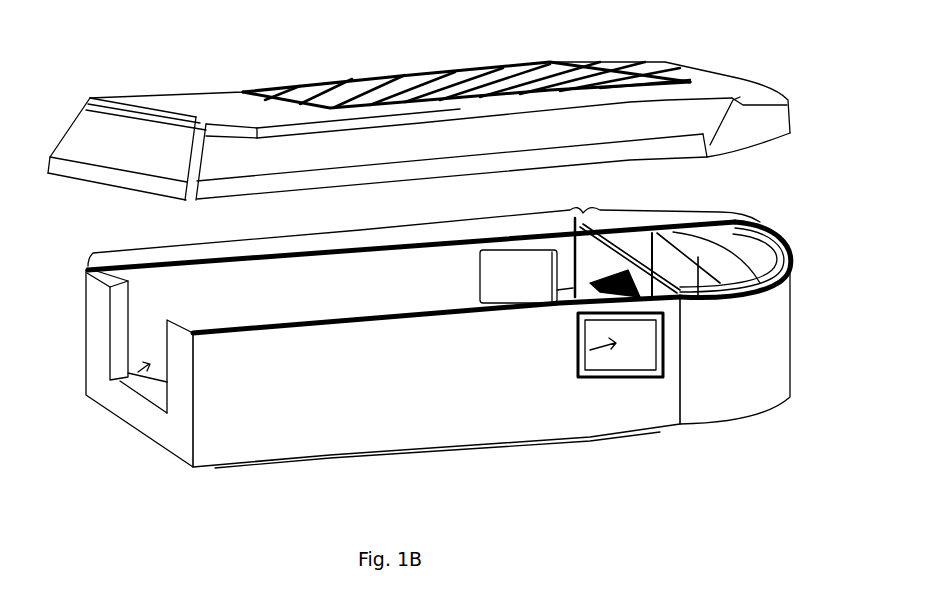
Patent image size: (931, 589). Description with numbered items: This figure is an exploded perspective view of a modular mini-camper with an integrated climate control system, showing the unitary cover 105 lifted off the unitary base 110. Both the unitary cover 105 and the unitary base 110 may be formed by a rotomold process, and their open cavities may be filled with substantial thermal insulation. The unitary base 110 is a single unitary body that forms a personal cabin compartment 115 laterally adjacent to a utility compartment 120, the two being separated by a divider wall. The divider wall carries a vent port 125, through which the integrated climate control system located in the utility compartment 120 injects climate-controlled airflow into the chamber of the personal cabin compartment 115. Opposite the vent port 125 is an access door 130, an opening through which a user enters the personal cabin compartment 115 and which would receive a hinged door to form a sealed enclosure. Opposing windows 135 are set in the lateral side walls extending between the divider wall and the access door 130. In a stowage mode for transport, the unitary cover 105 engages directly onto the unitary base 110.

The unitary cover 105 is at (668, 62).
The unitary base 110 is at (533, 438).
The personal cabin compartment 115 is at (340, 228).
The utility compartment 120 is at (765, 222).
The vent port 125 is at (497, 311).
The access door 130 is at (125, 385).
The windows 135 is at (499, 281).